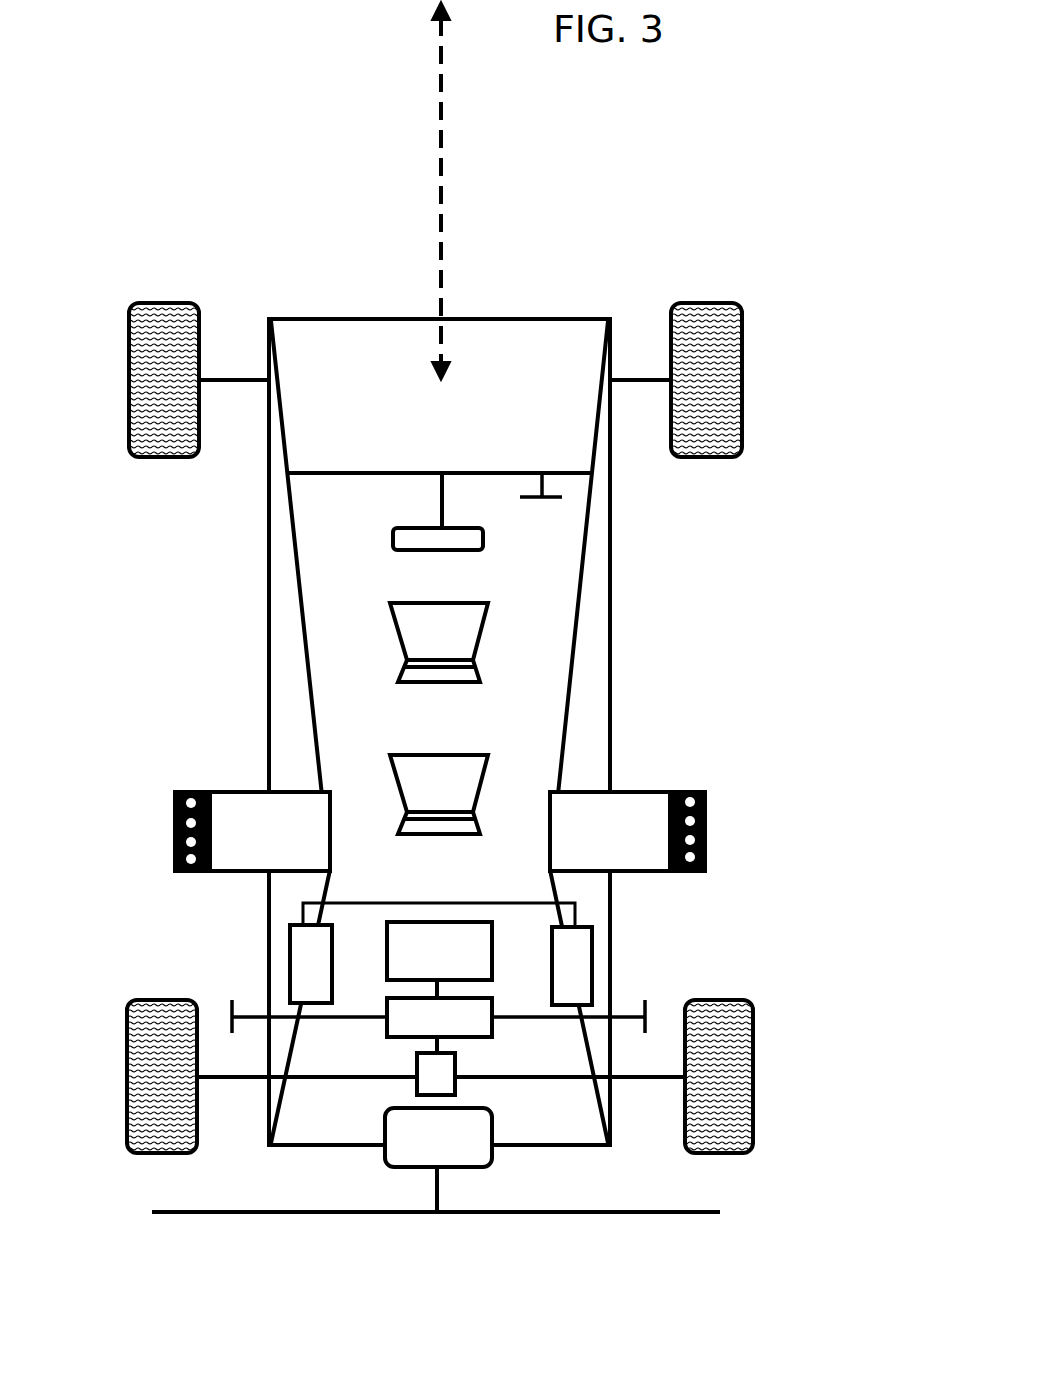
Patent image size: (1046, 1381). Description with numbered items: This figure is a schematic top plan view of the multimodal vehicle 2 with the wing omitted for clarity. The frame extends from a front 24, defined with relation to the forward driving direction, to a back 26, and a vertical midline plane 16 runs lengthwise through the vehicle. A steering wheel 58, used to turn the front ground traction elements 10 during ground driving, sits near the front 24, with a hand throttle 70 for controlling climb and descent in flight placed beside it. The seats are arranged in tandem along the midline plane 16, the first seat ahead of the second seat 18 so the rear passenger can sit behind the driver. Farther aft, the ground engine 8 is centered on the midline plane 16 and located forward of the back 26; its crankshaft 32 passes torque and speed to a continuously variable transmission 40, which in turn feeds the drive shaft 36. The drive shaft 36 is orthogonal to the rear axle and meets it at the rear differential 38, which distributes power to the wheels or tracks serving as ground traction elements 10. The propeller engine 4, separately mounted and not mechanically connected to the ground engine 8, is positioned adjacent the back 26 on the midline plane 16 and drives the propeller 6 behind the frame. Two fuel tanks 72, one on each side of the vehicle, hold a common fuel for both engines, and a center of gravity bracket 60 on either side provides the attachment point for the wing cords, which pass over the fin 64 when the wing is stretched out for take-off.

The multimodal vehicle 2 is at (687, 667).
The propeller engine 4 is at (490, 1155).
The propeller 6 is at (306, 1212).
The ground engine 8 is at (387, 937).
The ground traction elements 10 is at (710, 303).
The midline plane 16 is at (437, 108).
The second seat 18 is at (483, 782).
The front of the frame 24 is at (357, 318).
The back of the frame 26 is at (572, 1147).
The crankshaft 32 is at (440, 990).
The drive shaft 36 is at (433, 1043).
The rear differential 38 is at (457, 1083).
The continuously variable transmission 40 is at (492, 1027).
The steering wheel 58 is at (393, 542).
The center of gravity bracket 60 is at (192, 790).
The fin 64 is at (232, 1002).
The hand throttle 70 is at (557, 500).
The fuel tanks 72 is at (290, 942).